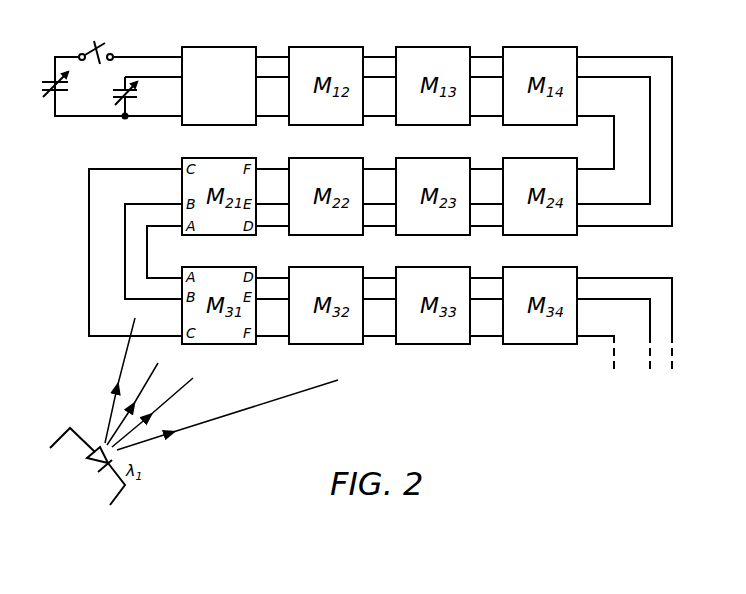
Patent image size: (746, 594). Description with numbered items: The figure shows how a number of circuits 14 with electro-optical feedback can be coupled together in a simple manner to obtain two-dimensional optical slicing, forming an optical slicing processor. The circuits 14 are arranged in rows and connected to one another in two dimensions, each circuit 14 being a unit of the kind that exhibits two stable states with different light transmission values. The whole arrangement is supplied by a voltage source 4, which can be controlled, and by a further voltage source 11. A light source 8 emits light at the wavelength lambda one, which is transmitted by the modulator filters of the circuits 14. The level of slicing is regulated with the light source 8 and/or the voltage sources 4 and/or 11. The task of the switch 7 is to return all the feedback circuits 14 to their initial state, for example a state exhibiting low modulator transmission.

The voltage source 4 is at (50, 77).
The switch 7 is at (87, 46).
The voltage source 11 is at (120, 102).
The circuit with electro-optical feedback 14 is at (220, 46).
The light source 8 is at (95, 467).